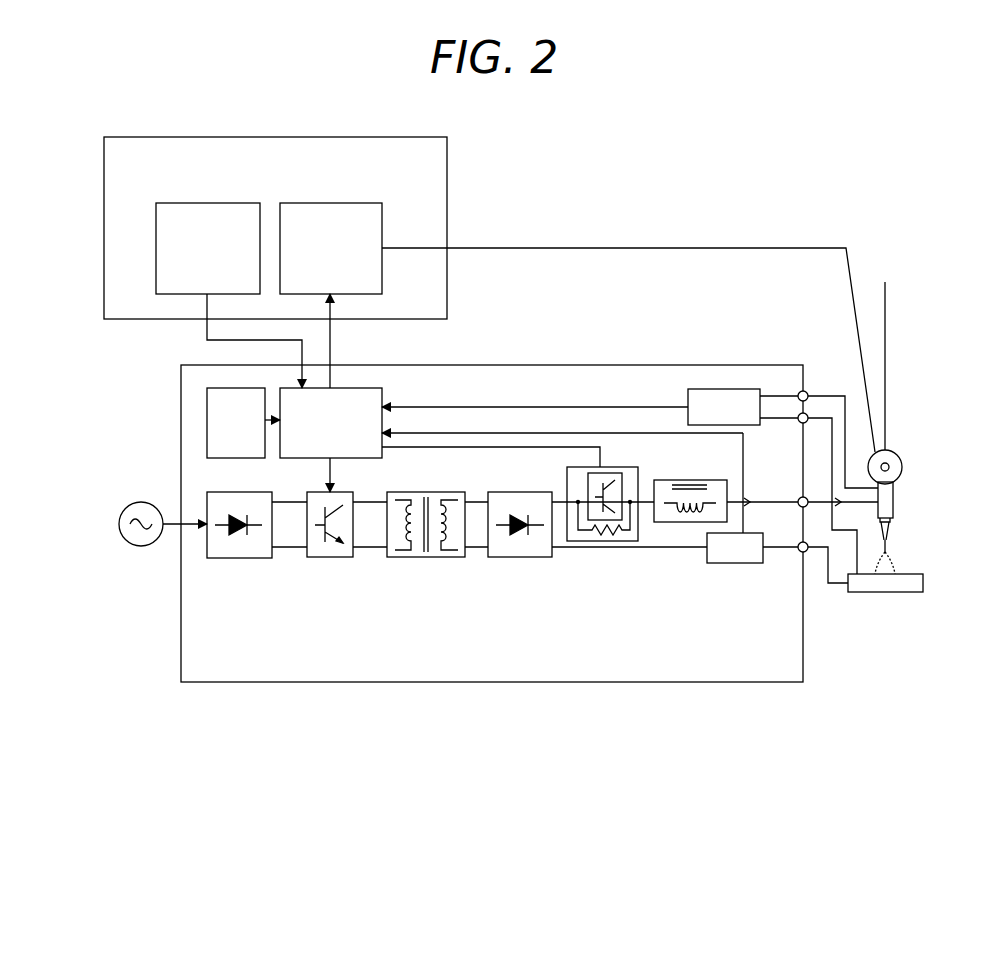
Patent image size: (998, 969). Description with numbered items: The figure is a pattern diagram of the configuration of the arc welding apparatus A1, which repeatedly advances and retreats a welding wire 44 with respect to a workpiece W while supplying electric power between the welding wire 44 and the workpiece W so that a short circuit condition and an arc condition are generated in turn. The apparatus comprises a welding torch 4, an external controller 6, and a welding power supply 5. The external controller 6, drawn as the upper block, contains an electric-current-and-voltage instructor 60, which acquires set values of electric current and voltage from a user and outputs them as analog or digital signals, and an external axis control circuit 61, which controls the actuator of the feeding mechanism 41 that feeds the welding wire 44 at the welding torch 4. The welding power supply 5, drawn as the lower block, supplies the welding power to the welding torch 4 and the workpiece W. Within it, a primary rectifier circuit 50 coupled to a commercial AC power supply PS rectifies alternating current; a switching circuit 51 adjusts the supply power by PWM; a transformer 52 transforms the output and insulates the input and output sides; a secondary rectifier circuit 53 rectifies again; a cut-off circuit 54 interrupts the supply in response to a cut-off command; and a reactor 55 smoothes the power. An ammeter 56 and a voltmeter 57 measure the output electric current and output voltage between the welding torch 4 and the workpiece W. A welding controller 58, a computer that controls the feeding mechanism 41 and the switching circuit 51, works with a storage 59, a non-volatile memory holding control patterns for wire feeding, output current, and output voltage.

The welding torch 4 is at (919, 506).
The feeding mechanism 41 is at (903, 457).
The welding wire 44 is at (892, 545).
The welding power supply 5 is at (140, 618).
The primary rectifier circuit 50 is at (242, 558).
The switching circuit 51 is at (330, 558).
The transformer 52 is at (425, 558).
The secondary rectifier circuit 53 is at (522, 558).
The cut-off circuit 54 is at (607, 542).
The reactor 55 is at (693, 522).
The ammeter 56 is at (730, 563).
The voltmeter 57 is at (732, 395).
The welding controller 58 is at (360, 398).
The storage 59 is at (207, 420).
The external controller 6 is at (85, 245).
The electric-current-and-voltage instructor 60 is at (208, 218).
The external axis control circuit 61 is at (331, 222).
The arc welding apparatus A1 is at (627, 205).
The commercial AC power supply PS is at (118, 523).
The workpiece W is at (923, 583).